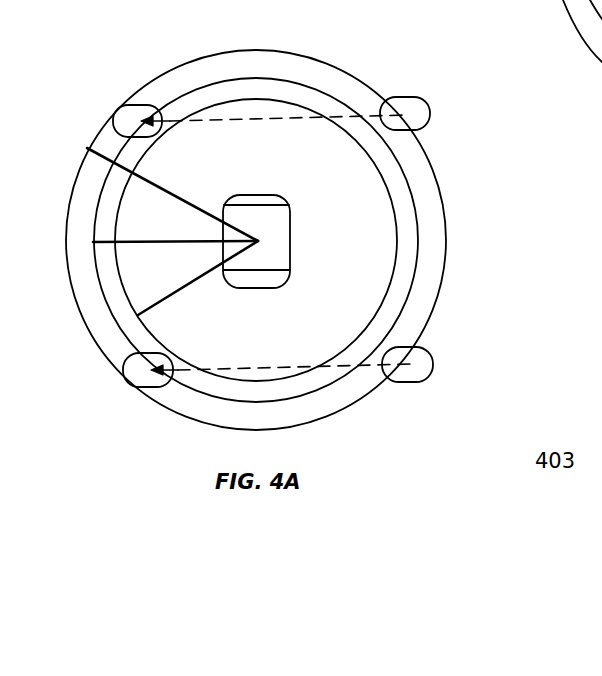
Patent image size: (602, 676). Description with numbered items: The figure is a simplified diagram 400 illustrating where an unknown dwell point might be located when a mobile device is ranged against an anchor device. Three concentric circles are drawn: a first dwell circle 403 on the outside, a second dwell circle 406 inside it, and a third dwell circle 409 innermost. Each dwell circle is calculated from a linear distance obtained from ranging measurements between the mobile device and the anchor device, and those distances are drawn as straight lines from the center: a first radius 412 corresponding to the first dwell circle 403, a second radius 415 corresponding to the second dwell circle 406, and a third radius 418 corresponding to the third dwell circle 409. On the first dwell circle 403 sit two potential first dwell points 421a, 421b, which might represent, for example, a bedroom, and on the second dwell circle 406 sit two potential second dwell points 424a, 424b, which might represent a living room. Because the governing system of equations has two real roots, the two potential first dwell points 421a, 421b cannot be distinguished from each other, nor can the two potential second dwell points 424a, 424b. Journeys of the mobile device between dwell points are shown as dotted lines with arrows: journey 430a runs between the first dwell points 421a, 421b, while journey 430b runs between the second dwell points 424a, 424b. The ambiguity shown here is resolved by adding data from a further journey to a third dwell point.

The diagram 400 is at (176, 454).
The first dwell circle 403 is at (340, 414).
The second dwell circle 406 is at (416, 300).
The third dwell circle 409 is at (398, 226).
The first radius 412 is at (166, 192).
The second radius 415 is at (139, 242).
The third radius 418 is at (173, 294).
The first potential dwell point 421a is at (431, 114).
The first potential dwell point 421b is at (433, 365).
The second potential dwell point 424a is at (118, 105).
The second potential dwell point 424b is at (125, 380).
The journey 430a is at (266, 120).
The journey 430b is at (263, 366).